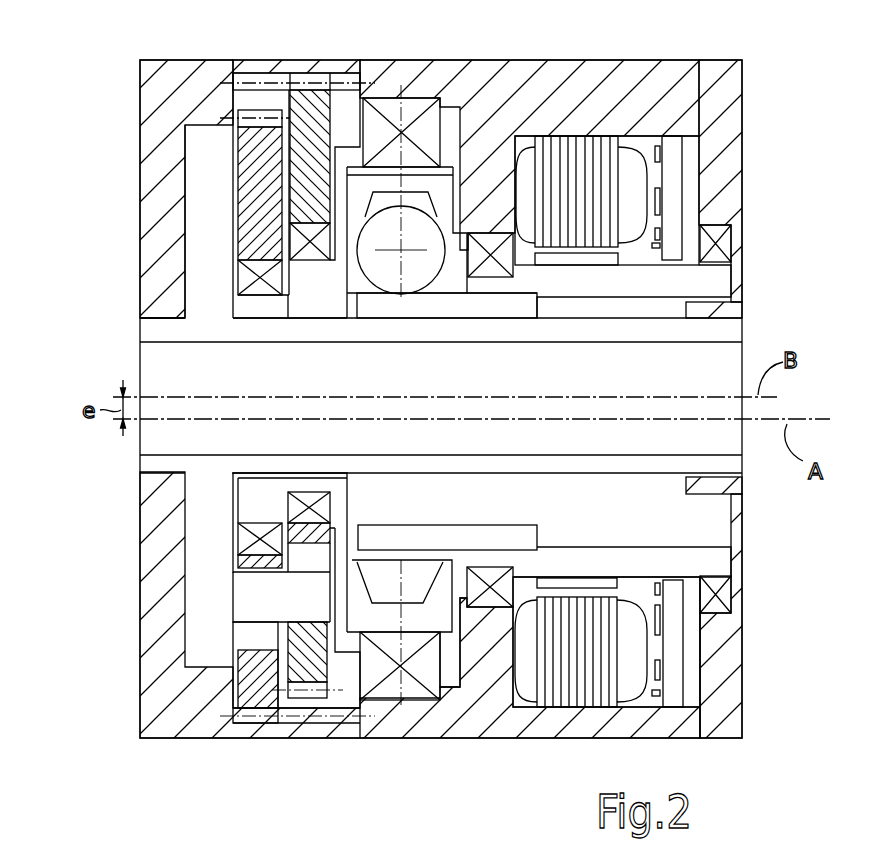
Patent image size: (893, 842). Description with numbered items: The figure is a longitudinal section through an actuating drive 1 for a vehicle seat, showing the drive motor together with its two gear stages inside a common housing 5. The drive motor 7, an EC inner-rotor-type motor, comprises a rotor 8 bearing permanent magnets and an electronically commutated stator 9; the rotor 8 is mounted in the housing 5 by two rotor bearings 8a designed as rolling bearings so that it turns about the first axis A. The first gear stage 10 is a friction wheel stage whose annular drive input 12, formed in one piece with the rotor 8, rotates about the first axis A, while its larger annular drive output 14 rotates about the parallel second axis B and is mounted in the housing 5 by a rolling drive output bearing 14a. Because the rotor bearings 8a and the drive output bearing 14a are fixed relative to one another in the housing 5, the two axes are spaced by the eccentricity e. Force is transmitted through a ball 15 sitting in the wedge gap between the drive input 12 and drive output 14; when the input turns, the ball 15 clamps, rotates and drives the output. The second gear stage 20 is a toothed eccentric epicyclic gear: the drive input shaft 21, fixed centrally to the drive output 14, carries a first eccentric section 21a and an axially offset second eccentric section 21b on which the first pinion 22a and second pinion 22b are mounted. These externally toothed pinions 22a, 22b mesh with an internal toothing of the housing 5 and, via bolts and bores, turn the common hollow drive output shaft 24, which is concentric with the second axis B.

The actuating drive 1 is at (133, 133).
The housing 5 is at (548, 85).
The drive motor 7 is at (613, 122).
The rotor 8 is at (698, 279).
The rotor bearings 8a is at (513, 577).
The stator 9 is at (593, 180).
The first gear stage 10 is at (452, 133).
The drive input 12 is at (390, 307).
The drive output 14 is at (442, 615).
The drive output bearing 14a is at (412, 687).
The rolling body 15 is at (415, 265).
The second gear stage 20 is at (277, 100).
The drive input shaft 21 is at (308, 470).
The first eccentric section 21a is at (313, 300).
The second eccentric section 21b is at (260, 498).
The first pinion 22a is at (312, 668).
The second pinion 22b is at (257, 685).
The drive output shaft 24 is at (187, 327).